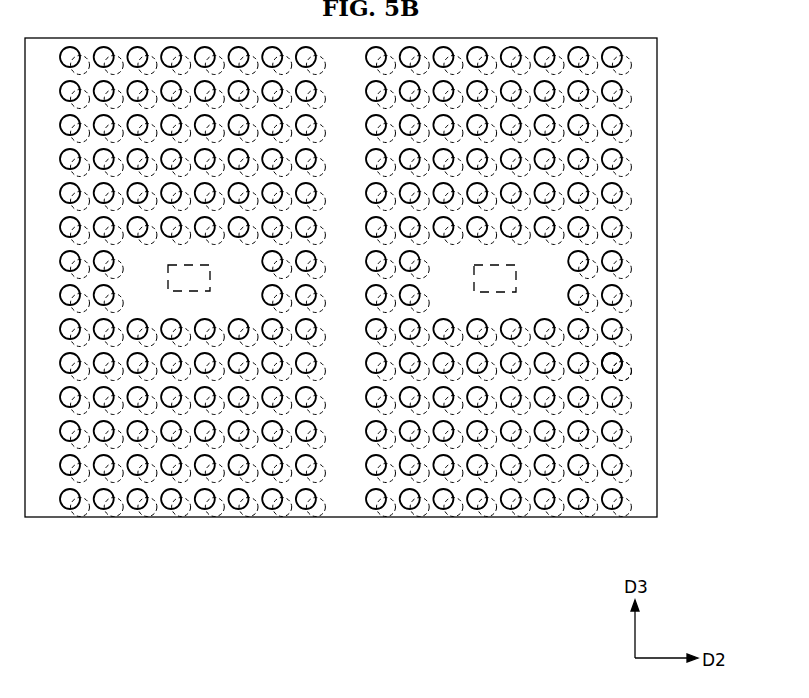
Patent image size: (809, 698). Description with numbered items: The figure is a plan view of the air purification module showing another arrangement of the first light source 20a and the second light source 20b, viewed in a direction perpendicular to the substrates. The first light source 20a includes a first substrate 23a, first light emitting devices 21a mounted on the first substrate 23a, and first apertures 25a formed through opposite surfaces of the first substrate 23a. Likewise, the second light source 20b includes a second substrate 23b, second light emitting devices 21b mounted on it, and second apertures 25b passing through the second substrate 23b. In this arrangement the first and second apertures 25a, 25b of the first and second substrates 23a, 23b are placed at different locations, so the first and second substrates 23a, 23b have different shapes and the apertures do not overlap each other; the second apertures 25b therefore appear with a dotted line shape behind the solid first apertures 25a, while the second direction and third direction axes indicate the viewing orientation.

The first light source 20a is at (404, 277).
The second light source 20b is at (657, 476).
The first light emitting devices 21a is at (475, 278).
The second light emitting devices 21b is at (500, 279).
The first substrate 23a is at (421, 282).
The second substrate 23b is at (643, 188).
The first apertures 25a is at (613, 363).
The second apertures 25b is at (628, 402).